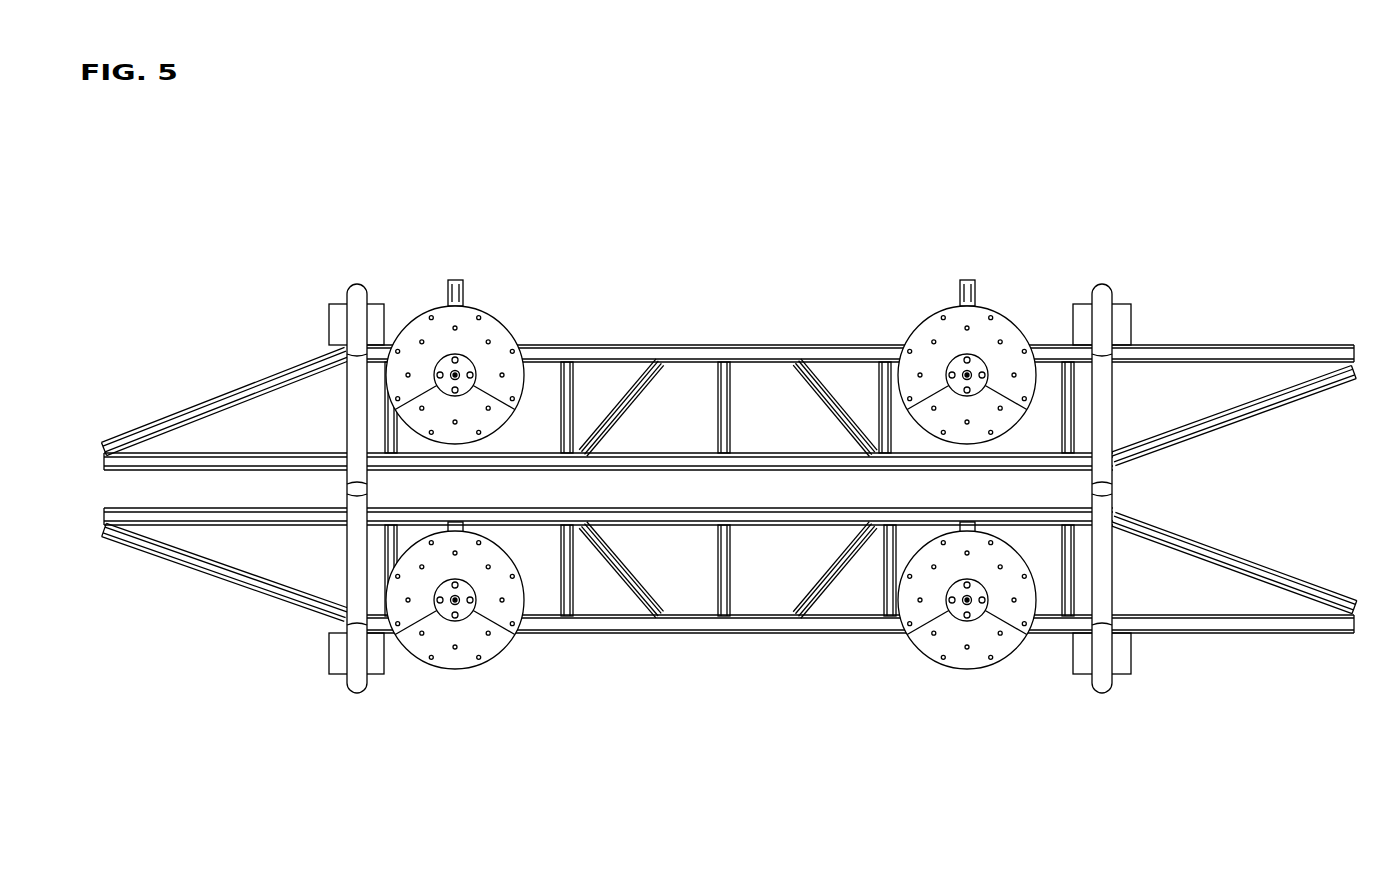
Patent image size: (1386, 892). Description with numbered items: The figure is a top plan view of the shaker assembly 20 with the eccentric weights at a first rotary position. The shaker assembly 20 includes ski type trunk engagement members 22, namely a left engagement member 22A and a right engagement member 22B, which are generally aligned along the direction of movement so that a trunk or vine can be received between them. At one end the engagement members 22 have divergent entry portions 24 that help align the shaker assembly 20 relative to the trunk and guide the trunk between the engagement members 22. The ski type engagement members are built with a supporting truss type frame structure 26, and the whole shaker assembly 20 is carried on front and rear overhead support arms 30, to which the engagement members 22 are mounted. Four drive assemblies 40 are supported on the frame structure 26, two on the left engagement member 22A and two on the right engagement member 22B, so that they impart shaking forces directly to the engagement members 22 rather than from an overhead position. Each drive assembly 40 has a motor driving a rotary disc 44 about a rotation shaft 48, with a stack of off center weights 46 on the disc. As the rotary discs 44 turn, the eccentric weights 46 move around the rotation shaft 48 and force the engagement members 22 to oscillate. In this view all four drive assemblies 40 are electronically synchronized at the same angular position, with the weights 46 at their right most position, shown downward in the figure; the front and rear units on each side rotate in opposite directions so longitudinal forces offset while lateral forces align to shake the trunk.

The shaker assembly 20 is at (1173, 147).
The trunk engagement members 22 is at (595, 462).
The left engagement member 22A is at (1270, 352).
The right engagement member 22B is at (1207, 622).
The divergent entry portions 24 is at (1261, 402).
The truss type frame structure 26 is at (725, 400).
The overhead support arms 30 is at (358, 298).
The drive assemblies 40 is at (728, 475).
The rotary discs 44 is at (430, 312).
The weights 46 is at (478, 423).
The rotation shaft 48 is at (456, 374).